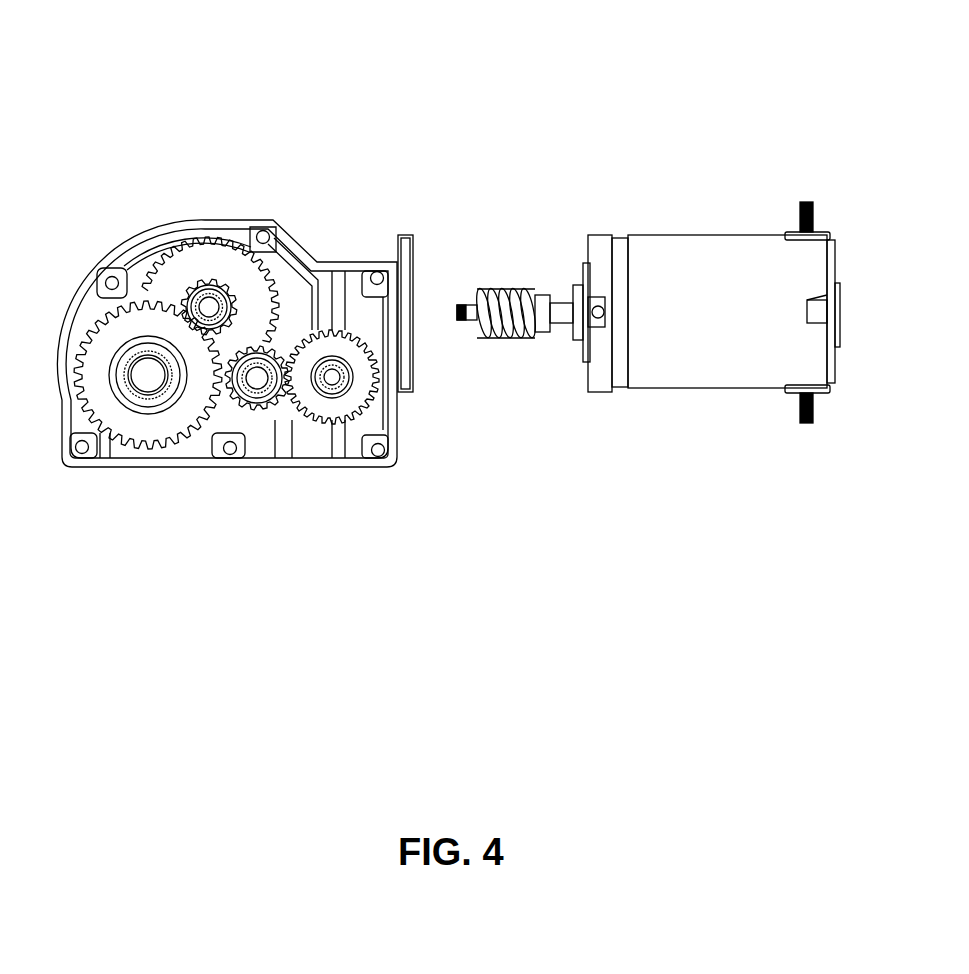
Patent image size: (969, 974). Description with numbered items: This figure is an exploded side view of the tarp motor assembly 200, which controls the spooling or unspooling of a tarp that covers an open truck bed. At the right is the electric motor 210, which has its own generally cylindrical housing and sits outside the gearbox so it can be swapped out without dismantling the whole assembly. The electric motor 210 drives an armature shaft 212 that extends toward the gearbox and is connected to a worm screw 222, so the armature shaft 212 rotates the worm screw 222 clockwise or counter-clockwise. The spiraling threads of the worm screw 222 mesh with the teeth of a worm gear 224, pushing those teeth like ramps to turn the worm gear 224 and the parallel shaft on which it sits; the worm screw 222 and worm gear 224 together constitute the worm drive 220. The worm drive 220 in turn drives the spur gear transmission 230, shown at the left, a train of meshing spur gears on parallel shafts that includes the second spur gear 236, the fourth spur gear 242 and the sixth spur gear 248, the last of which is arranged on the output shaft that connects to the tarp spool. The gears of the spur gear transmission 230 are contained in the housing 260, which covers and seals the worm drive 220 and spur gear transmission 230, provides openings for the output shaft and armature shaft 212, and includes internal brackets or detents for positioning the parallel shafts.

The tarp motor assembly 200 is at (466, 87).
The electric motor 210 is at (717, 250).
The armature shaft 212 is at (565, 315).
The worm drive 220 is at (550, 472).
The worm screw 222 is at (515, 307).
The worm gear 224 is at (353, 395).
The spur gear transmission 230 is at (410, 183).
The second spur gear 236 is at (260, 417).
The fourth spur gear 242 is at (210, 268).
The sixth spur gear 248 is at (180, 415).
The housing 260 is at (75, 457).